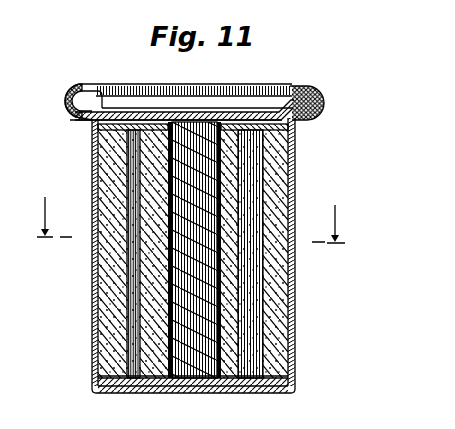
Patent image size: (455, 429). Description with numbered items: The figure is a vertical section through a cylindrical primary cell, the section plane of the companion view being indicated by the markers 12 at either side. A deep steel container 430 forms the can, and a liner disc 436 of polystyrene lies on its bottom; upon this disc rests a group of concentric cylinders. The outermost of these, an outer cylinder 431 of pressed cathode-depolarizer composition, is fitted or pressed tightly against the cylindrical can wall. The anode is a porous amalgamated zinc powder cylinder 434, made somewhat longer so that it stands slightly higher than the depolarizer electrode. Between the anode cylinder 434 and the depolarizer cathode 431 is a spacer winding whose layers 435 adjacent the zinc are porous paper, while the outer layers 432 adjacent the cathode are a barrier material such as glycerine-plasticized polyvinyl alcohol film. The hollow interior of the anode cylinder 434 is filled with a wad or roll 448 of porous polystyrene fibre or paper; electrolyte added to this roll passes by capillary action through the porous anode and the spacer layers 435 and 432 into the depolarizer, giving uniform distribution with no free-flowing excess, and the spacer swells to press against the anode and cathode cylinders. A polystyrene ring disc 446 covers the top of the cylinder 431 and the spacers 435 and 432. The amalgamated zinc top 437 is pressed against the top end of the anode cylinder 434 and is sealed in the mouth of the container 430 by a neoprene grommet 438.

The section line 12- 12 is at (193, 234).
The steel container 430 is at (293, 316).
The outer cylinder of cathode-depolarizer composition 431 is at (268, 277).
The outer spacer layers 432 is at (203, 187).
The zinc powder cylinder 434 is at (250, 138).
The porous paper layers 435 is at (205, 156).
The liner disc 436 is at (281, 384).
The amalgamated zinc top 437 is at (256, 112).
The neoprene grommet 438 is at (319, 91).
The polystyrene ring disc 446 is at (294, 127).
The wad or roll 448 is at (200, 360).